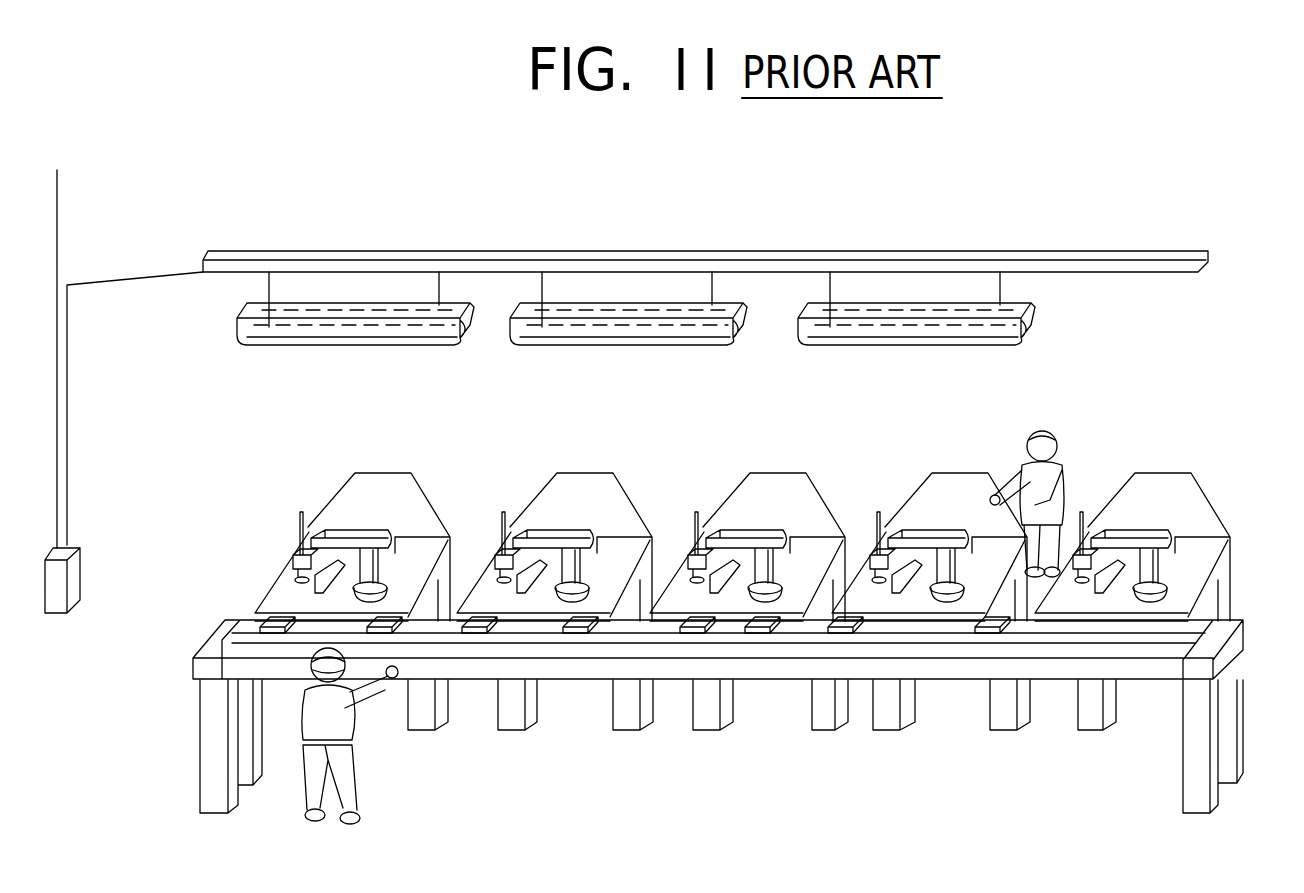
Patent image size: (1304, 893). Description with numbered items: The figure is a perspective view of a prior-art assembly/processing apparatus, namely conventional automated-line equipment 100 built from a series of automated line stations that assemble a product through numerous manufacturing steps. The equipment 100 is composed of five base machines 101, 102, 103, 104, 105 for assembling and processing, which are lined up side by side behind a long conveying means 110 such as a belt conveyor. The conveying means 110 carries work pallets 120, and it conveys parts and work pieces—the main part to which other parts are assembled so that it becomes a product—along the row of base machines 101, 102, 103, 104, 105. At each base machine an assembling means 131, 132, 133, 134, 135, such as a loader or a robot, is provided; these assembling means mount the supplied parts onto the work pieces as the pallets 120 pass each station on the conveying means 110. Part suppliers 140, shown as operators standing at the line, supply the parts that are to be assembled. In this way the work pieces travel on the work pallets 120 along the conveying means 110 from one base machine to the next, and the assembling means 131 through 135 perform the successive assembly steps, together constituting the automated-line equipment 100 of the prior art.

The automated-line equipment 100 is at (1197, 460).
The base machine 101 is at (412, 532).
The base machine 102 is at (627, 532).
The base machine 103 is at (813, 532).
The base machine 104 is at (960, 523).
The base machine 105 is at (1183, 535).
The conveying means 110 is at (805, 658).
The work pallets 120 is at (475, 633).
The assembling means 131 is at (327, 524).
The assembling means 132 is at (544, 510).
The assembling means 133 is at (744, 511).
The assembling means 134 is at (919, 509).
The assembling means 135 is at (1122, 510).
The part suppliers 140 is at (310, 775).